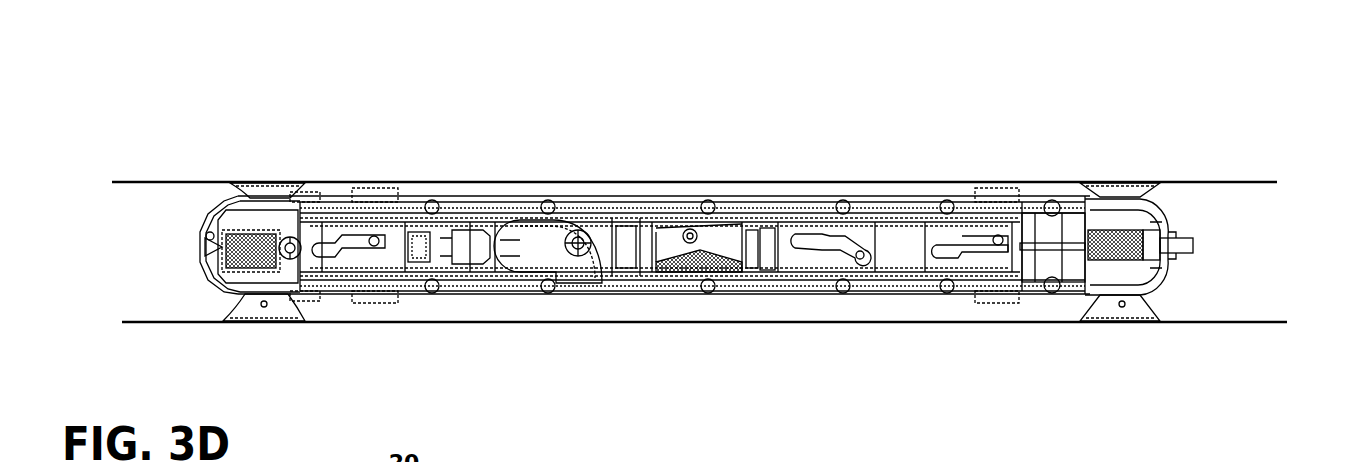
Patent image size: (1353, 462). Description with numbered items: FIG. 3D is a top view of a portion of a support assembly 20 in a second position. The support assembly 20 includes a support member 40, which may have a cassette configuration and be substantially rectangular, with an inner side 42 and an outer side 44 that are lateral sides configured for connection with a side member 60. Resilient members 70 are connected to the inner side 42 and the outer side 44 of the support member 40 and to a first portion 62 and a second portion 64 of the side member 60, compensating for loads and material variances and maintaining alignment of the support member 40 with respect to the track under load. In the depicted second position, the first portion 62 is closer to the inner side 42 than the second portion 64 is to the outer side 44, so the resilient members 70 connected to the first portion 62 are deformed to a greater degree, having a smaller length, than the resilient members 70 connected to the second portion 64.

The support assembly 20 is at (407, 115).
The support member 40 is at (1208, 245).
The inner side 42 is at (898, 196).
The outer side 44 is at (577, 296).
The side member 60 is at (699, 257).
The first portion 62 is at (735, 181).
The second portion 64 is at (763, 324).
The resilient member 70 is at (263, 181).